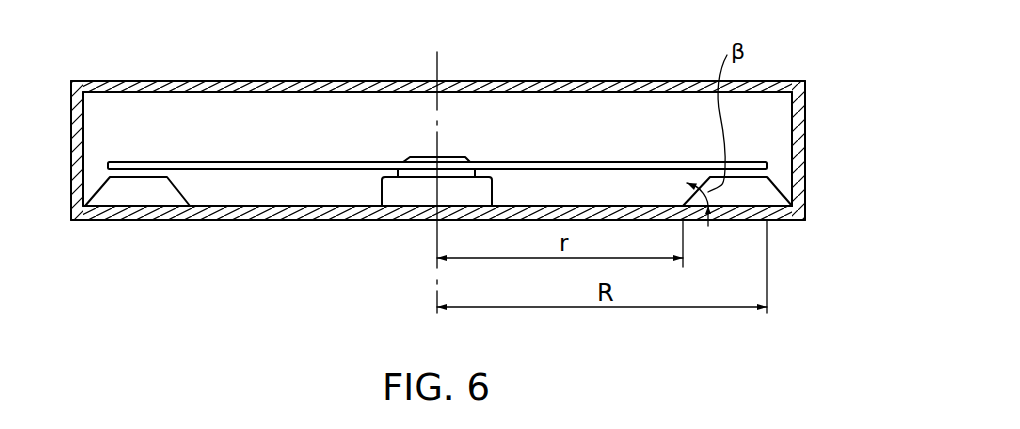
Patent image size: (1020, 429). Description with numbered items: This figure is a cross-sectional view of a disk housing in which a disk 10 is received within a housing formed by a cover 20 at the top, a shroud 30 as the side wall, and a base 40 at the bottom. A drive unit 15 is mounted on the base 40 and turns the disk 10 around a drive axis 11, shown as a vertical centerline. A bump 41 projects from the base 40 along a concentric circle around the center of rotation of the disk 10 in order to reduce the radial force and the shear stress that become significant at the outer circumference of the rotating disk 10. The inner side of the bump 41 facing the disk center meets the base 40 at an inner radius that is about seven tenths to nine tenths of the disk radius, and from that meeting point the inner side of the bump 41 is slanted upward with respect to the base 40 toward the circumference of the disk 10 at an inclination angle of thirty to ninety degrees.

The disk 10 is at (570, 162).
The drive axis 11 is at (437, 67).
The drive unit 15 is at (408, 197).
The cover 20 is at (163, 81).
The shroud 30 is at (803, 122).
The base 40 is at (268, 219).
The bump 41 is at (768, 184).